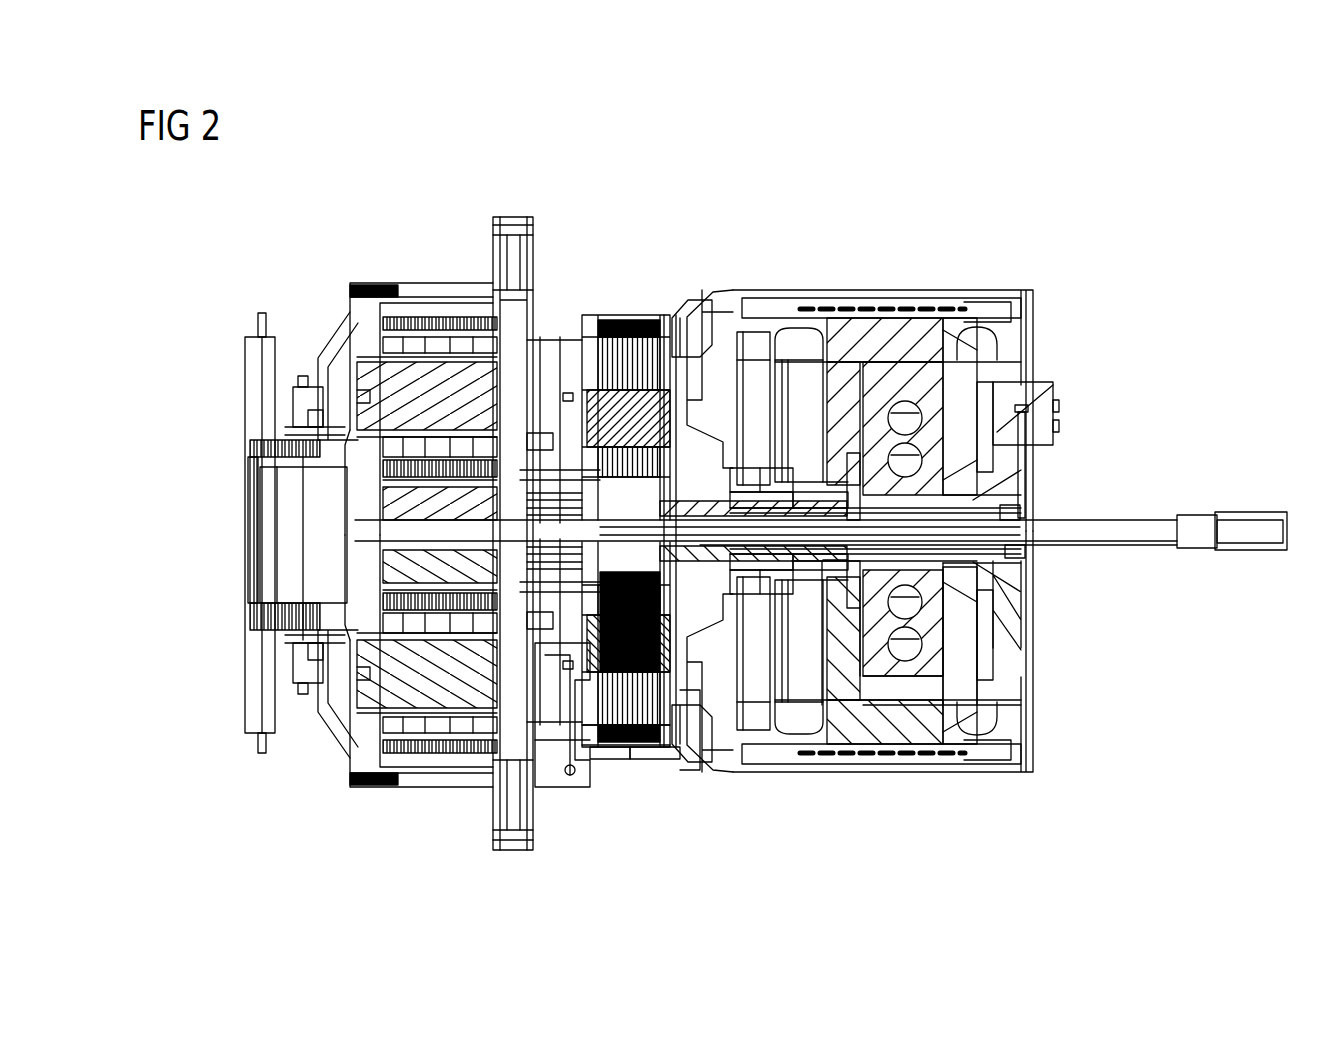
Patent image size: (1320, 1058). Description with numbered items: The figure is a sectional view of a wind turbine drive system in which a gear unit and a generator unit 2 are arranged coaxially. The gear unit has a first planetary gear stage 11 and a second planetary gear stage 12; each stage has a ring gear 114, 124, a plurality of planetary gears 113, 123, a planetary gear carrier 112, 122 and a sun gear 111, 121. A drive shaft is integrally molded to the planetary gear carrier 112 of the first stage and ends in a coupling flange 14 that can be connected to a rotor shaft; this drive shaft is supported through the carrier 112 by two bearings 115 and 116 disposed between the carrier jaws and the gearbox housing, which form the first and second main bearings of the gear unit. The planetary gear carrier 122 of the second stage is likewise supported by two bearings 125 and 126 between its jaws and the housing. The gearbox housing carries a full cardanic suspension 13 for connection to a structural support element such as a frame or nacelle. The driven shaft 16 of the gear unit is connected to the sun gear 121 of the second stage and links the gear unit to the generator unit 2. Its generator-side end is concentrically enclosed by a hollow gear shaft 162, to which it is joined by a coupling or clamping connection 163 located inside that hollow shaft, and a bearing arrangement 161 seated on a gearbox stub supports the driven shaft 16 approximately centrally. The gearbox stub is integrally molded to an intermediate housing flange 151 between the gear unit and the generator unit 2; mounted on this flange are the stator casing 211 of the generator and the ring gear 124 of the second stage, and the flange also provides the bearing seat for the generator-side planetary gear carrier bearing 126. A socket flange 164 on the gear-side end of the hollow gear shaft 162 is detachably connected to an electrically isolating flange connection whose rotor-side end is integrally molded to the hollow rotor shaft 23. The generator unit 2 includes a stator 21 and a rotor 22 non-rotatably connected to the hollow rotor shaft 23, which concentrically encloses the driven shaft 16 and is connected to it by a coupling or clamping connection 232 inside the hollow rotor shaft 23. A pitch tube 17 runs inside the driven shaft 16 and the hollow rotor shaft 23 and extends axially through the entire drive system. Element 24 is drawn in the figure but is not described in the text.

The generator unit 2 is at (1113, 217).
The first planetary gear stage 11 is at (491, 178).
The second planetary gear stage 12 is at (800, 178).
The suspension 13 is at (520, 800).
The coupling flange 14 is at (250, 352).
The driven shaft 16 is at (740, 740).
The pitch tube 17 is at (1248, 510).
The stator 21 is at (920, 315).
The rotor 22 is at (1028, 360).
The hollow rotor shaft 23 is at (1030, 567).
The sensor 24 is at (1028, 397).
The sun gear 111 is at (420, 380).
The planetary gear carrier 112 is at (358, 338).
The planetary gears 113 is at (440, 740).
The ring gear 114 is at (457, 295).
The bearing 115 is at (318, 410).
The bearing 116 is at (543, 400).
The sun gear 121 is at (635, 350).
The planetary gear carrier 122 is at (670, 355).
The planetary gears 123 is at (630, 390).
The ring gear 124 is at (630, 740).
The bearing 125 is at (603, 740).
The planetary gear carrier bearing 126 is at (713, 752).
The intermediate housing flange 151 is at (712, 300).
The bearing arrangement 161 is at (750, 468).
The hollow gear shaft 162 is at (805, 490).
The coupling or clamping connection 163 is at (822, 585).
The socket flange 164 is at (837, 568).
The stator casing 211 is at (768, 755).
The coupling or clamping connection 232 is at (852, 455).